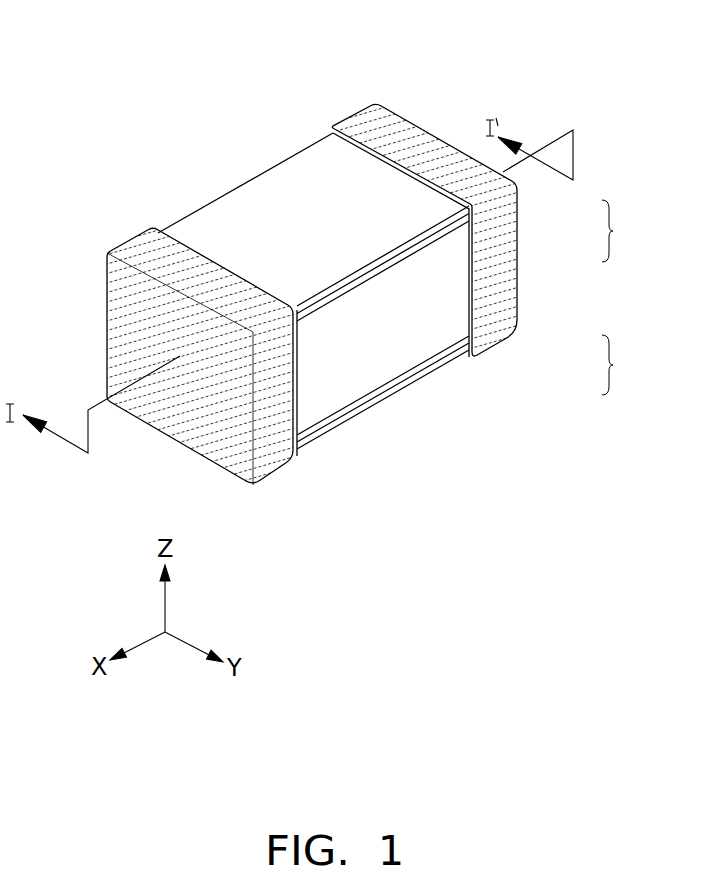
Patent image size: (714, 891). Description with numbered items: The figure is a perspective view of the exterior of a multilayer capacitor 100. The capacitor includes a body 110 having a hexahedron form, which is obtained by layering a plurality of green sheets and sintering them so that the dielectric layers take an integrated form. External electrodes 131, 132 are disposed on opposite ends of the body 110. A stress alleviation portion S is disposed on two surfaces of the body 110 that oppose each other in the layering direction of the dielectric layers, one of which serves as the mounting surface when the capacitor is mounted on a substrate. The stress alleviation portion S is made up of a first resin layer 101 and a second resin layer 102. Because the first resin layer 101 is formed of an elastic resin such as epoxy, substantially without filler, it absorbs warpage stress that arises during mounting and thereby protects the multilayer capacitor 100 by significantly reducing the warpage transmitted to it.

The multilayer capacitor 100 is at (142, 49).
The body 110 is at (260, 197).
The first resin layer 101 is at (472, 220).
The second resin layer 102 is at (472, 210).
The stress alleviation portion S is at (618, 297).
The external electrode 131 is at (143, 247).
The external electrode 132 is at (372, 132).